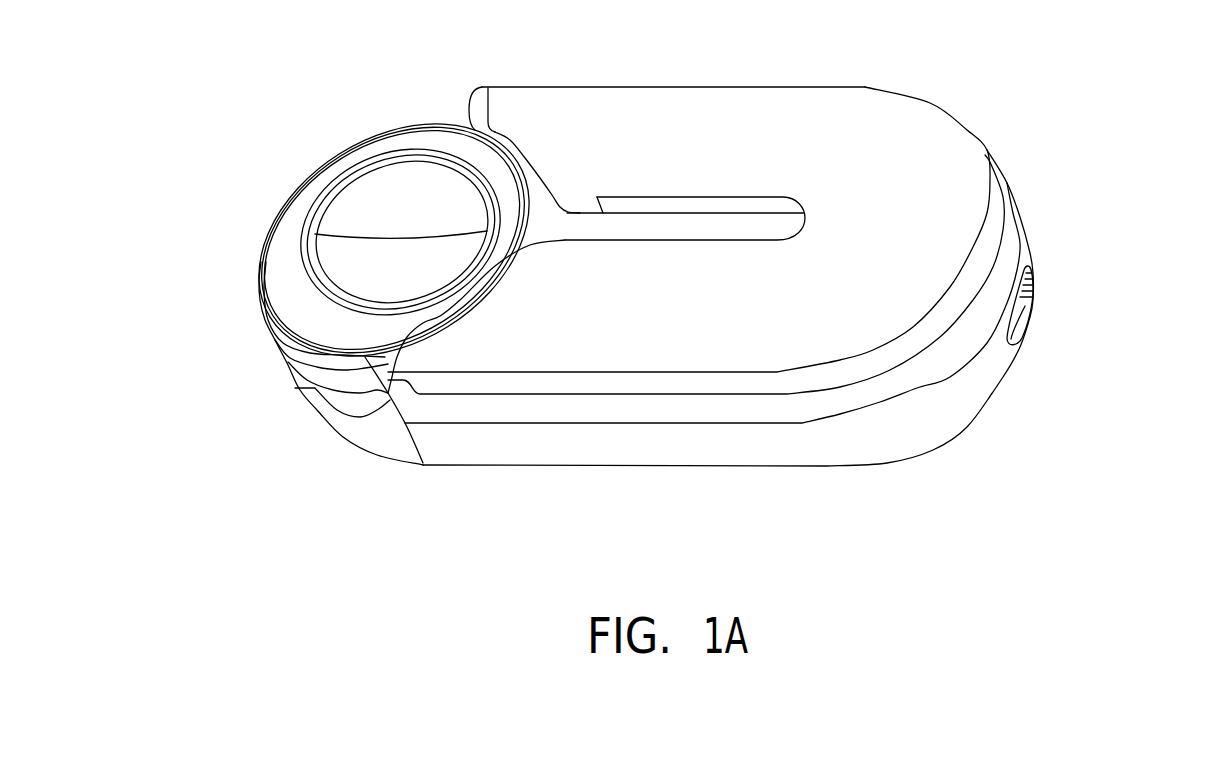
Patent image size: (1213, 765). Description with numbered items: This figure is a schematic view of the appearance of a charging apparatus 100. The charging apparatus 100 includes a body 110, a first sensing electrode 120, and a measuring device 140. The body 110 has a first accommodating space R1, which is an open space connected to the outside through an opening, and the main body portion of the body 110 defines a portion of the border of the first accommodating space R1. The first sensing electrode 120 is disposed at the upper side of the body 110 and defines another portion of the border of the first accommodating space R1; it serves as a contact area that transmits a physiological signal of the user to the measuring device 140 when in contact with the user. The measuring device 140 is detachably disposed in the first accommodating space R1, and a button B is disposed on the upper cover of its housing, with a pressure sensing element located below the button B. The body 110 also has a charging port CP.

The charging apparatus 100 is at (1121, 528).
The body 110 is at (1017, 258).
The first sensing electrode 120 is at (790, 113).
The measuring device 140 is at (287, 267).
The button B is at (393, 193).
The first accommodating space R1 is at (557, 220).
The charging port CP is at (1036, 303).